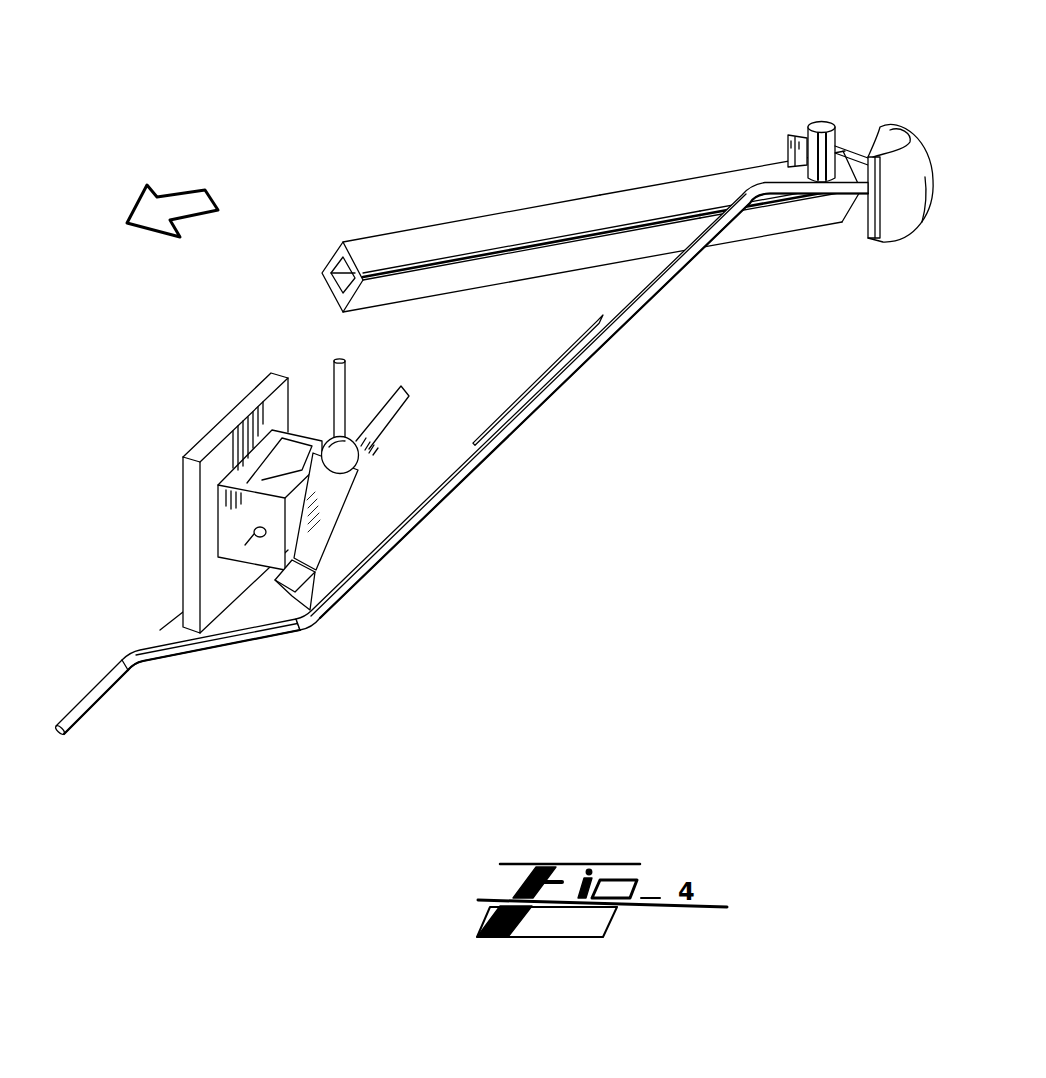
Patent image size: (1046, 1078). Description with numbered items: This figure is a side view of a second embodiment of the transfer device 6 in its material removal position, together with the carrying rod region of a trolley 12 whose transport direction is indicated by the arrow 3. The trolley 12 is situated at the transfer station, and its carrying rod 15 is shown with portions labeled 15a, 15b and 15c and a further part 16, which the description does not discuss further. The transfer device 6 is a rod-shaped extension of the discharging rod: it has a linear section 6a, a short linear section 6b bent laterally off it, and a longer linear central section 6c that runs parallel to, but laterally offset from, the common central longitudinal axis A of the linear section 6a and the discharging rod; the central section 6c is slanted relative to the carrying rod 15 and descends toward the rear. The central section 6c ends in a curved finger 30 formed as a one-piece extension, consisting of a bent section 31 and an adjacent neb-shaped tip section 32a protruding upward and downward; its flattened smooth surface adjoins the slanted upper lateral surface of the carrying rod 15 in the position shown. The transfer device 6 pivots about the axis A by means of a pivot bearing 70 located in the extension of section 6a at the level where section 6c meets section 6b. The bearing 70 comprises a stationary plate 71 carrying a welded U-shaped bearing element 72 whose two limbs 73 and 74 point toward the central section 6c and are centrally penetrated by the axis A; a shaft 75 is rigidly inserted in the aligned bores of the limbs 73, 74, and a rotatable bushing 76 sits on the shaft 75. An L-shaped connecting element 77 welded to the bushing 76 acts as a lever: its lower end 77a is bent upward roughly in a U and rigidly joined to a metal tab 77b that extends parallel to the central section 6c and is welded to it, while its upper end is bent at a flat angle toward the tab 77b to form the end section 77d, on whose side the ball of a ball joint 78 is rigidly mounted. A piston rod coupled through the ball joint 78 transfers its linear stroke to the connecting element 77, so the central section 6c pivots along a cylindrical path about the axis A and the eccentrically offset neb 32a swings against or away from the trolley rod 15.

The arrow 3 is at (183, 197).
The trolley 12 is at (605, 140).
The carrying rod 15 is at (372, 250).
The hook end of tube 15a is at (890, 210).
The slot in tube 15b is at (473, 233).
The top wall of tube 15c is at (692, 166).
The pin 16 is at (822, 122).
The finger 30 is at (757, 193).
The bent section 31 is at (775, 160).
The tip section 32a is at (837, 223).
The transfer device 6 is at (490, 590).
The linear section 6a is at (85, 712).
The short linear section 6b is at (243, 650).
The central section 6c is at (522, 422).
The pivot bearing 70 is at (167, 367).
The stationary plate 71 is at (193, 483).
The U-shaped bearing element 72 is at (258, 447).
The limb 73 is at (242, 520).
The limb 74 is at (288, 444).
The shaft 75 is at (258, 535).
The rotatable bushing 76 is at (290, 472).
The connecting element 77 is at (439, 524).
The lower end 77a is at (276, 582).
The metal tab 77b is at (485, 437).
The bent end section 77d is at (388, 390).
The ball joint 78 is at (370, 467).
The central longitudinal axis A is at (172, 622).